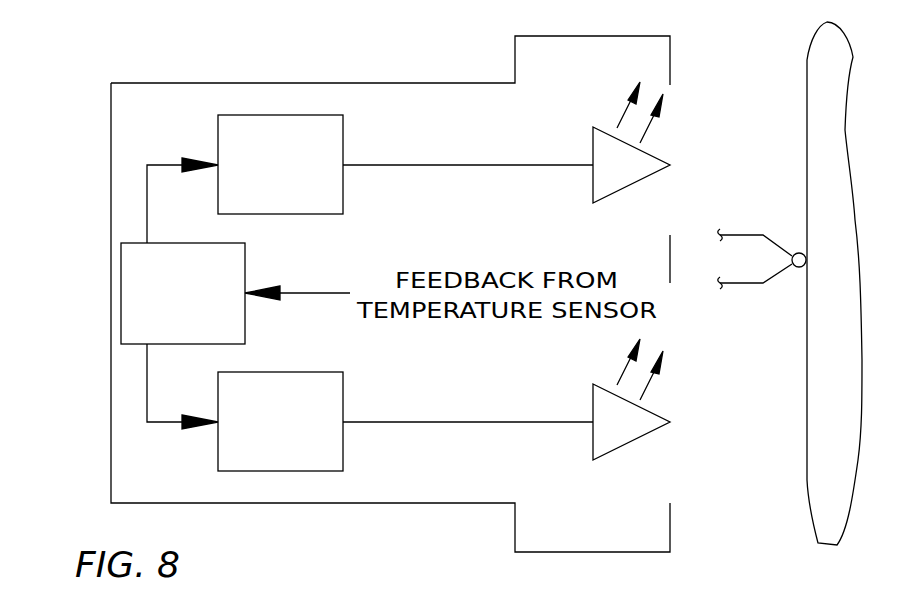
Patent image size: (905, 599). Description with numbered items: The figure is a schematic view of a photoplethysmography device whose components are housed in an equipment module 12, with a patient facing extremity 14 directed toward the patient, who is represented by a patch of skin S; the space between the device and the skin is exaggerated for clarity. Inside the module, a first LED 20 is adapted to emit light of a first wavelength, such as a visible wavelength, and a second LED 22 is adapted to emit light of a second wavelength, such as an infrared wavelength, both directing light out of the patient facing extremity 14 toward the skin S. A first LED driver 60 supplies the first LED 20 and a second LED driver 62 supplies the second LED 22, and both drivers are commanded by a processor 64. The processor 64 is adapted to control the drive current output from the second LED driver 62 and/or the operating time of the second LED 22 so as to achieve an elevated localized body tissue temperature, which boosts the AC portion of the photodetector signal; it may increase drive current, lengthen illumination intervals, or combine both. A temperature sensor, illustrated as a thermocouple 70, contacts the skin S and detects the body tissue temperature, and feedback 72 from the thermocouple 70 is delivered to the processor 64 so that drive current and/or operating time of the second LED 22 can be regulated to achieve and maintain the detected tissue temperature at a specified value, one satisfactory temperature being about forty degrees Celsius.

The equipment module 12 is at (455, 115).
The patient facing extremity 14 is at (670, 60).
The first LED 20 is at (605, 438).
The second LED 22 is at (615, 155).
The first LED driver 60 is at (312, 447).
The second LED driver 62 is at (322, 135).
The processor 64 is at (139, 296).
The thermocouple 70 is at (740, 283).
The feedback 72 is at (288, 293).
The patch of skin S is at (808, 128).